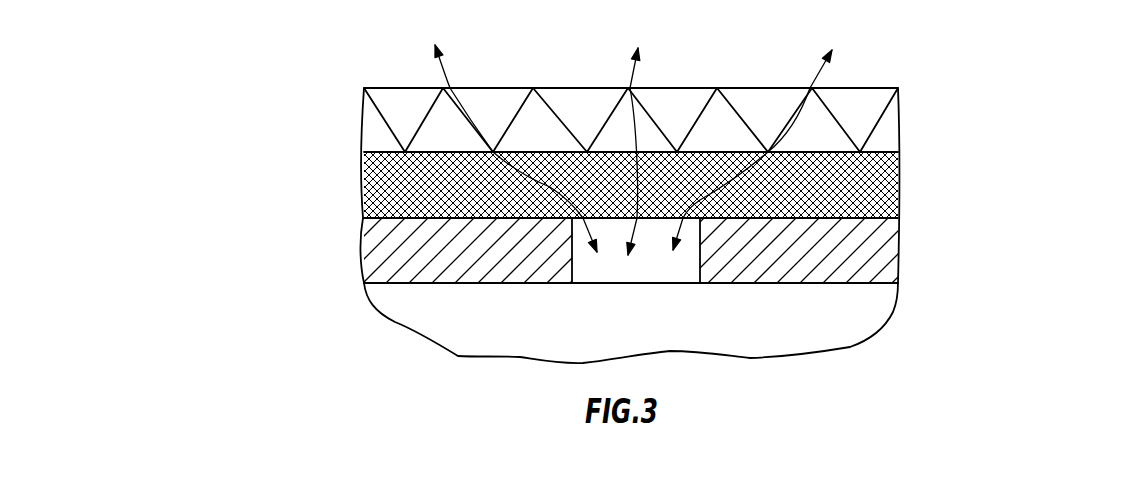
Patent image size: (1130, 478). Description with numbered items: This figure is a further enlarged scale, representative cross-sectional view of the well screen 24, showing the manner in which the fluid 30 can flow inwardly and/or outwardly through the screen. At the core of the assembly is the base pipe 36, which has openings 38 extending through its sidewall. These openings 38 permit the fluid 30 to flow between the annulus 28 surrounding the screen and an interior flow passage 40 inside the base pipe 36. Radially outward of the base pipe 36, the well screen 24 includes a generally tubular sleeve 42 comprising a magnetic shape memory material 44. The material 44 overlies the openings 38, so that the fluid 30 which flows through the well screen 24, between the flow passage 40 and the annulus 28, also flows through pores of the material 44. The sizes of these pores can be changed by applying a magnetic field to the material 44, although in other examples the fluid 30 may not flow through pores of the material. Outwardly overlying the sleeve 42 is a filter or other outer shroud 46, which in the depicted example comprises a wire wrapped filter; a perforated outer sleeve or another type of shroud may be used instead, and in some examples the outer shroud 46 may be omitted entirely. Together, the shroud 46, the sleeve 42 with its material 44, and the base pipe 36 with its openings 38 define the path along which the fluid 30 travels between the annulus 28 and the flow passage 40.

The well screen 24 is at (1018, 110).
The annulus 28 is at (620, 22).
The fluid 30 is at (447, 72).
The base pipe 36 is at (898, 243).
The openings 38 is at (700, 264).
The interior flow passage 40 is at (880, 283).
The tubular sleeve 42 is at (376, 228).
The magnetic shape memory material 44 is at (372, 184).
The outer shroud 46 is at (705, 88).